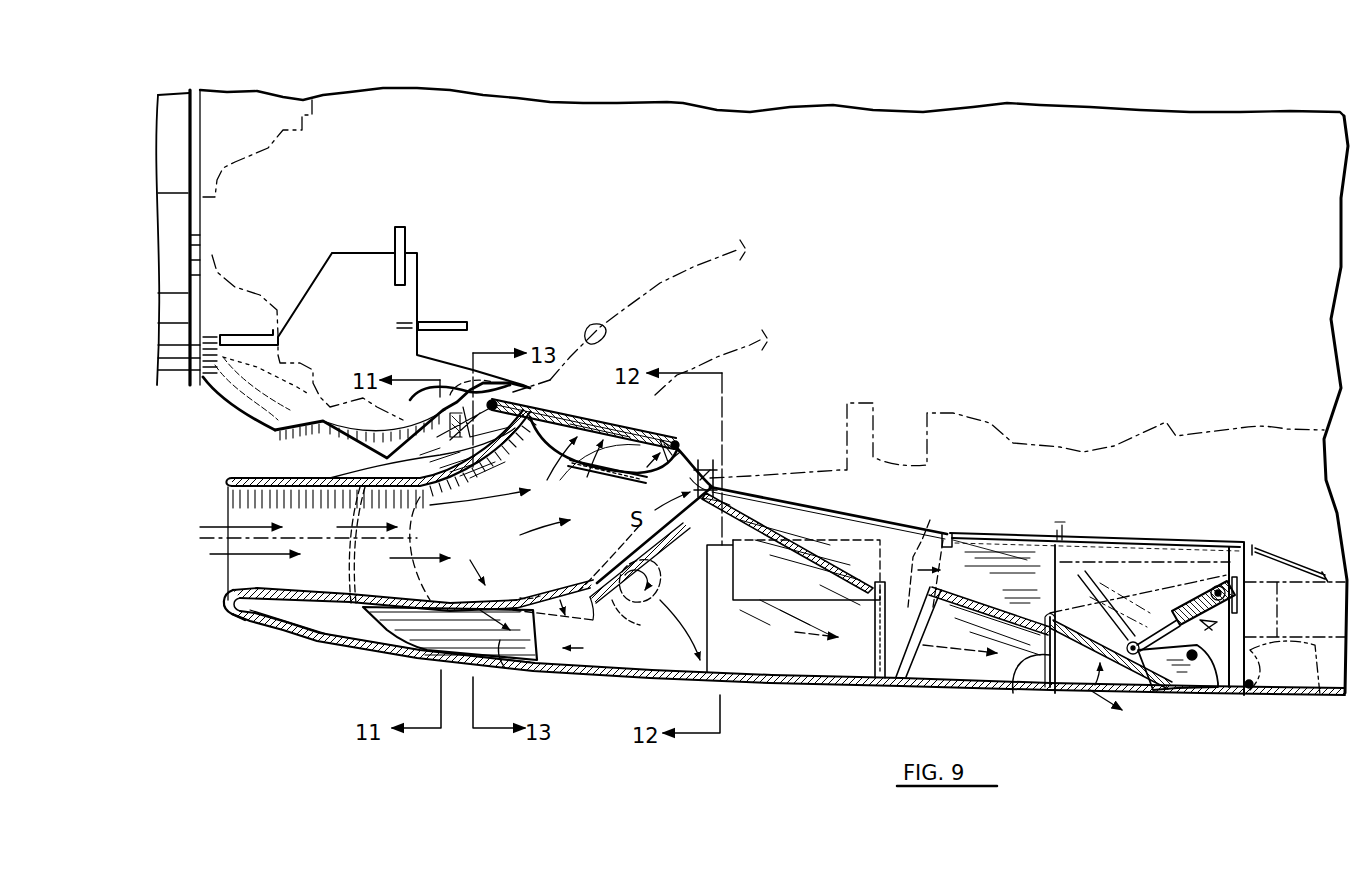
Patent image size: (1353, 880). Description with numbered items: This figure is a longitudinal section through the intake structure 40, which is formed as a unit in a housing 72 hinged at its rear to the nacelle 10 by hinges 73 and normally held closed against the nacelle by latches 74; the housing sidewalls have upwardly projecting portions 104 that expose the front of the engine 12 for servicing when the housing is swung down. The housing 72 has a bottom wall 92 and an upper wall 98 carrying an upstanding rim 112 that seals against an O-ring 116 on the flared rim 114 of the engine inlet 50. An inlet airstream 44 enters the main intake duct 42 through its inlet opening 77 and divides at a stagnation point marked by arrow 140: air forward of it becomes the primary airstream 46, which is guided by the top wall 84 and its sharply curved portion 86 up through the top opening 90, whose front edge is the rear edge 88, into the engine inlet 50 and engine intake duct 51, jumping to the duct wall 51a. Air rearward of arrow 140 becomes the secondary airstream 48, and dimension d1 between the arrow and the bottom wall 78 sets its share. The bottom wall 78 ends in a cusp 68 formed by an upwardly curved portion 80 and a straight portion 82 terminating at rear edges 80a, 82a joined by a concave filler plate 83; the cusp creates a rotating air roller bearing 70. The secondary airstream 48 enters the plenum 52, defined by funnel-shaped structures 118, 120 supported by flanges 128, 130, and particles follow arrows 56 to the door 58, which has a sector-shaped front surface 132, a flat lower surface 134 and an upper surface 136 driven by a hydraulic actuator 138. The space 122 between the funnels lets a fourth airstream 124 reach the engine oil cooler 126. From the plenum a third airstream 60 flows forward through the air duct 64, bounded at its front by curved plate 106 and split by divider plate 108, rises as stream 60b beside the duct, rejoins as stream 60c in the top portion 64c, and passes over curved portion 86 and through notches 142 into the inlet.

The nacelle 10 is at (1234, 128).
The engine 12 is at (1131, 439).
The intake structure 40 is at (788, 700).
The main intake duct 42 is at (297, 580).
The inlet airstream 44 is at (225, 525).
The primary airstream 46 is at (645, 487).
The secondary airstream 48 is at (693, 530).
The engine inlet 50 is at (629, 425).
The engine intake duct 51 is at (662, 283).
The wall of engine intake duct 51a is at (593, 330).
The plenum 52 is at (793, 606).
The arrows 56 is at (800, 637).
The door 58 is at (1150, 695).
The third airstream 60 is at (592, 640).
The third airstream portion 60b is at (425, 590).
The rejoined third airstream 60c is at (437, 400).
The air duct 64 is at (430, 652).
The top portion of air duct 64c is at (397, 470).
The cusp 68 is at (550, 590).
The air roller bearing 70 is at (640, 581).
The housing 72 is at (953, 693).
The hinges 73 is at (1248, 690).
The latches 74 is at (443, 322).
The inlet opening 77 is at (243, 570).
The bottom wall of main intake duct 78 is at (317, 597).
The upwardly curved bottom wall portion 80 is at (570, 590).
The rear edge of curved bottom wall portion 80a is at (640, 545).
The straight bottom wall portion 82 is at (545, 615).
The rear edge of straight bottom wall portion 82a is at (610, 622).
The concave filler plate 83 is at (626, 618).
The top wall of main intake duct 84 is at (333, 478).
The curved portion 86 is at (483, 463).
The rear edge of curved portion 88 is at (547, 408).
The top opening 90 is at (600, 415).
The housing bottom wall 92 is at (568, 676).
The housing upper wall 98 is at (835, 493).
The upwardly projecting sidewall portion 104 is at (345, 272).
The curved plate 106 is at (340, 640).
The vertical divider plate 108 is at (517, 673).
The upstanding rim 112 is at (715, 495).
The flared rim 114 is at (697, 473).
The O-ring 116 is at (715, 475).
The funnel-shaped structure 118 is at (815, 560).
The funnel-shaped structure 120 is at (975, 557).
The space 122 is at (898, 582).
The fourth stream of air 124 is at (940, 545).
The engine oil cooler 126 is at (1300, 580).
The flange 128 is at (845, 535).
The flange 130 is at (1040, 577).
The sector-shaped front surface 132 is at (1010, 690).
The flat lower surface 134 is at (1085, 688).
The upper surface of door 136 is at (1125, 586).
The hydraulic actuator 138 is at (1180, 597).
The arrow 140 is at (620, 500).
The notches 142 is at (575, 480).
The dimension d1 is at (517, 590).